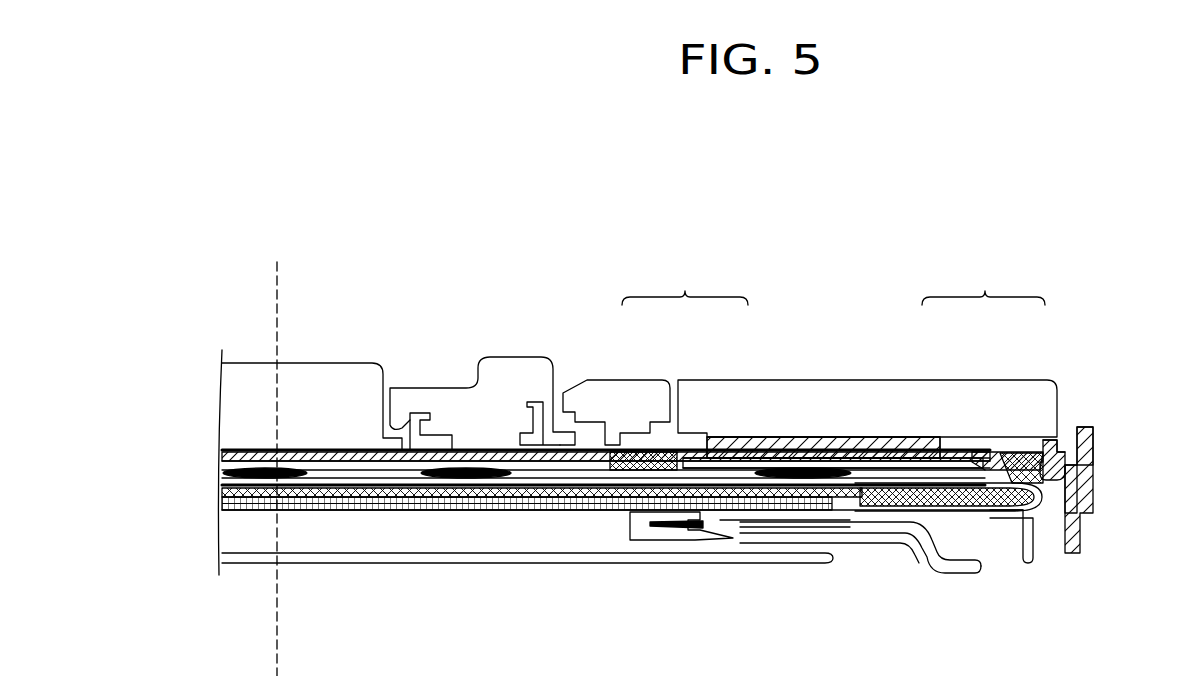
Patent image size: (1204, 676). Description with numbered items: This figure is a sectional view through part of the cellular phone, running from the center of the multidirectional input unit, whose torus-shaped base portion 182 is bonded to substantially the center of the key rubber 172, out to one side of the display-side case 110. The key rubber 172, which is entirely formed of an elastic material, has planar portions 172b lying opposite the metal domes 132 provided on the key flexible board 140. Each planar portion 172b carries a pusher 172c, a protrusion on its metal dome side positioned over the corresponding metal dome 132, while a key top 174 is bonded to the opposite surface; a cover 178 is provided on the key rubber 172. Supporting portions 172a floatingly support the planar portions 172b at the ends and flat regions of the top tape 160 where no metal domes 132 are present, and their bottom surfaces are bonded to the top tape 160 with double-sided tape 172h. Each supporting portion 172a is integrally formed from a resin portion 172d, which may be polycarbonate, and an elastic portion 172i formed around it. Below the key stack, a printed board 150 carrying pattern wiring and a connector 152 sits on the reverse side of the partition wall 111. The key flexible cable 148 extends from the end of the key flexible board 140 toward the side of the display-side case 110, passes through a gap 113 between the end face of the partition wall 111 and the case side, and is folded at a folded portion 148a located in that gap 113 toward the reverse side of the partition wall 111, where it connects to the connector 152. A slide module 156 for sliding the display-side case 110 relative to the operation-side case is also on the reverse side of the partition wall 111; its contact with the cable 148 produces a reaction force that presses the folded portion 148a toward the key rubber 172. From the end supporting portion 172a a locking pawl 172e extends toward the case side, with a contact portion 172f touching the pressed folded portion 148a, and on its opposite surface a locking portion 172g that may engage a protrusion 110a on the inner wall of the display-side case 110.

The display-side case 110 is at (1090, 512).
The protrusion 110a is at (1060, 440).
The partition wall 111 is at (318, 512).
The gap 113 is at (1053, 493).
The metal dome 132 is at (450, 487).
The key flexible board 140 is at (755, 480).
The key flexible cable 148 is at (917, 535).
The folded portion 148a is at (1040, 500).
The printed board 150 is at (567, 510).
The connector 152 is at (642, 530).
The slide module 156 is at (703, 557).
The top tape 160 is at (382, 500).
The key rubber 172 is at (888, 408).
The supporting portion 172a is at (833, 361).
The planar portion 172b is at (412, 415).
The pusher 172c is at (503, 470).
The resin portion 172d is at (633, 455).
The locking pawl 172e is at (1057, 473).
The contact portion 172f is at (1048, 470).
The locking portion 172g is at (1062, 458).
The double-sided tape 172h is at (628, 475).
The elastic portion 172i is at (677, 455).
The key top 174 is at (328, 385).
The cover 178 is at (595, 393).
The base portion 182 is at (510, 372).